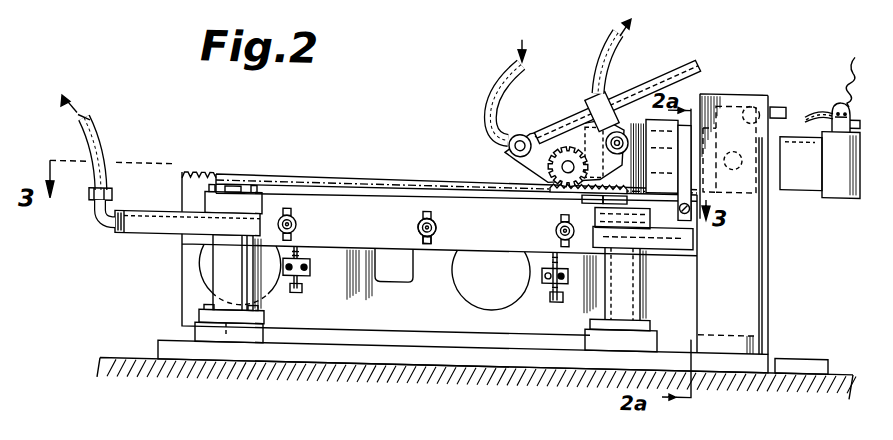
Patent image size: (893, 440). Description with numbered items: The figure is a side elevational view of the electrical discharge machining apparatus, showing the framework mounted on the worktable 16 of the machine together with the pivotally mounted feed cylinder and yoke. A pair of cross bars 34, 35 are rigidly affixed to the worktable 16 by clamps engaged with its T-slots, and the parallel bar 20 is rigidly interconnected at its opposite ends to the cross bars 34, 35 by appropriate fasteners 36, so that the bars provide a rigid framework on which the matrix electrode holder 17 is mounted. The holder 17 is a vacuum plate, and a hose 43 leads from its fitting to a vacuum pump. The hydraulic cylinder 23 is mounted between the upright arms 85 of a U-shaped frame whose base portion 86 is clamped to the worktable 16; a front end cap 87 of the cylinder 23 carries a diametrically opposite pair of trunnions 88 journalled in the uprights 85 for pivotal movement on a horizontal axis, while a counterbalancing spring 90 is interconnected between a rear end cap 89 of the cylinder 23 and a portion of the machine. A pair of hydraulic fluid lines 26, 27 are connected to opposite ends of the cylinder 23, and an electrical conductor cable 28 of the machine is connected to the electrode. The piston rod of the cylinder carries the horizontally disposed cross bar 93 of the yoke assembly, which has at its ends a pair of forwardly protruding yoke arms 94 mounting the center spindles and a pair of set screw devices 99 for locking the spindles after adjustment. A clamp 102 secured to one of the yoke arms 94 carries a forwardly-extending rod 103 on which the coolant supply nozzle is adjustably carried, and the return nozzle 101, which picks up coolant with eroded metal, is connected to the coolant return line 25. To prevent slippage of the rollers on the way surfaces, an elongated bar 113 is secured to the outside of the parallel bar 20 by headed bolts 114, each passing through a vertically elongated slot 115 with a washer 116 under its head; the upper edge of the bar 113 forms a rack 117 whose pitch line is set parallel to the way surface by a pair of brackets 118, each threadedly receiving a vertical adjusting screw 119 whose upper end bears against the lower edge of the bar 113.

The worktable 16 is at (785, 344).
The matrix electrode holder 17 is at (141, 233).
The parallel bar 20 is at (388, 309).
The hydraulic cylinder 23 is at (800, 181).
The coolant return line 25 is at (603, 46).
The hydraulic fluid line 26 is at (786, 85).
The hydraulic fluid line 27 is at (812, 99).
The electrical conductor cable 28 is at (530, 60).
The cross bar 34 is at (264, 326).
The cross bar 35 is at (593, 336).
The fasteners 36 is at (258, 289).
The hose 43 is at (82, 129).
The upright arms 85 is at (768, 252).
The base portion 86 is at (732, 306).
The front end cap 87 is at (738, 80).
The trunnions 88 is at (731, 149).
The rear end cap 89 is at (830, 144).
The counterbalancing spring 90 is at (841, 74).
The cross bar 93 is at (668, 115).
The yoke arms 94 is at (623, 120).
The set screw devices 99 is at (580, 117).
The return nozzle 101 is at (577, 115).
The clamp 102 is at (606, 83).
The rod 103 is at (694, 50).
The elongated bar 113 is at (340, 240).
The headed bolts 114 is at (437, 213).
The vertically elongated slot 115 is at (422, 207).
The washer 116 is at (437, 227).
The rack 117 is at (202, 170).
The brackets 118 is at (547, 270).
The adjusting screw 119 is at (556, 291).